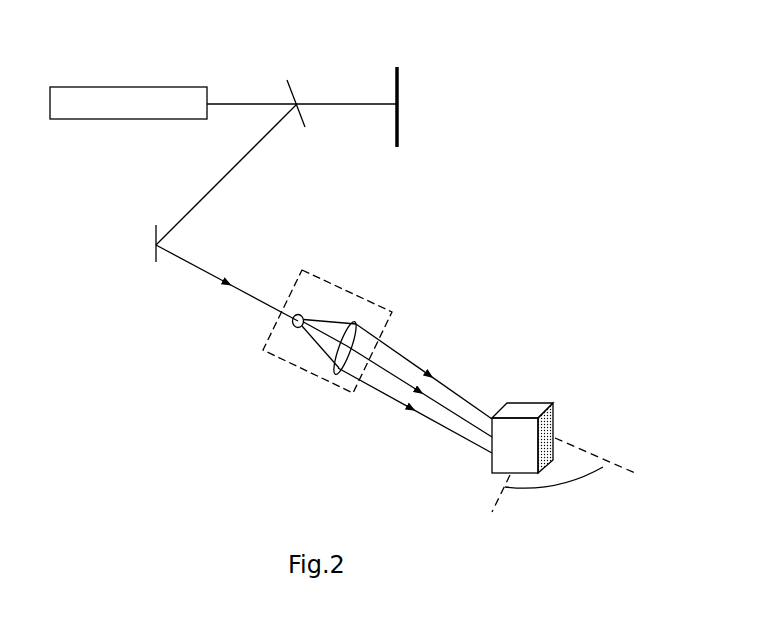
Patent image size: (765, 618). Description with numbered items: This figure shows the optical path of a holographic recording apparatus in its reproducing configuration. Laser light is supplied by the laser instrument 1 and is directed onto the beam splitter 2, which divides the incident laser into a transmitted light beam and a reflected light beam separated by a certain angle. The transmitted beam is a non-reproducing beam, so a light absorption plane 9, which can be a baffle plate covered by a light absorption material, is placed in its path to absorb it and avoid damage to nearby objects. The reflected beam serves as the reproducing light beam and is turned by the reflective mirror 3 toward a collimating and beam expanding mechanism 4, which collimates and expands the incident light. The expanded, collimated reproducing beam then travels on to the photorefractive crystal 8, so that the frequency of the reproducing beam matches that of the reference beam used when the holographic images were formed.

The laser instrument 1 is at (90, 98).
The beam splitter 2 is at (292, 100).
The reflective mirror 3 is at (153, 233).
The collimating and beam expanding mechanism 4 is at (293, 365).
The photorefractive crystal 8 is at (555, 438).
The optical absorption plane 9 is at (399, 75).